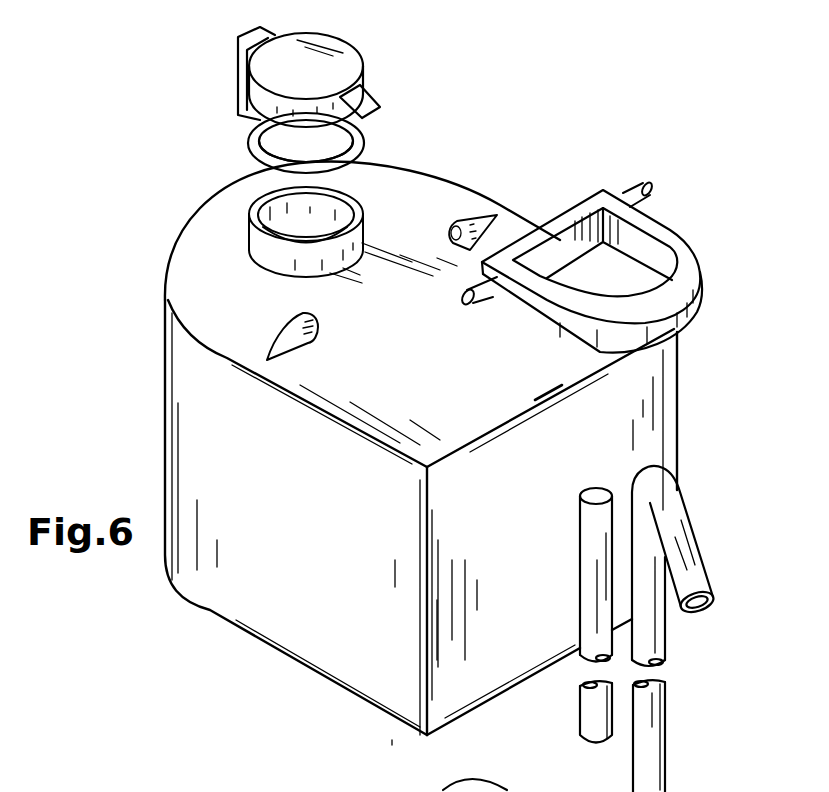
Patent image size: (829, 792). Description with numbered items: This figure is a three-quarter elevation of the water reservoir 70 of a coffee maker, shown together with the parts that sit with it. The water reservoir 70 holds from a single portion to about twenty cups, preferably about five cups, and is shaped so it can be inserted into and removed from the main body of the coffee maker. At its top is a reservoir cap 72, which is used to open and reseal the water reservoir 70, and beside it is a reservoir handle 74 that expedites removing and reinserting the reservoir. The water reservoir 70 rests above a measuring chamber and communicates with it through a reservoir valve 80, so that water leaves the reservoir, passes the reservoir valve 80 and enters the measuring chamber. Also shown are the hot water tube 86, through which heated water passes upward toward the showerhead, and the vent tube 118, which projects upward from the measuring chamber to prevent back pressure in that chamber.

The water reservoir 70 is at (128, 384).
The reservoir cap 72 is at (297, 68).
The reservoir handle 74 is at (597, 192).
The reservoir valve 80 is at (443, 789).
The hot water tube 86 is at (650, 763).
The vent tube 118 is at (587, 710).